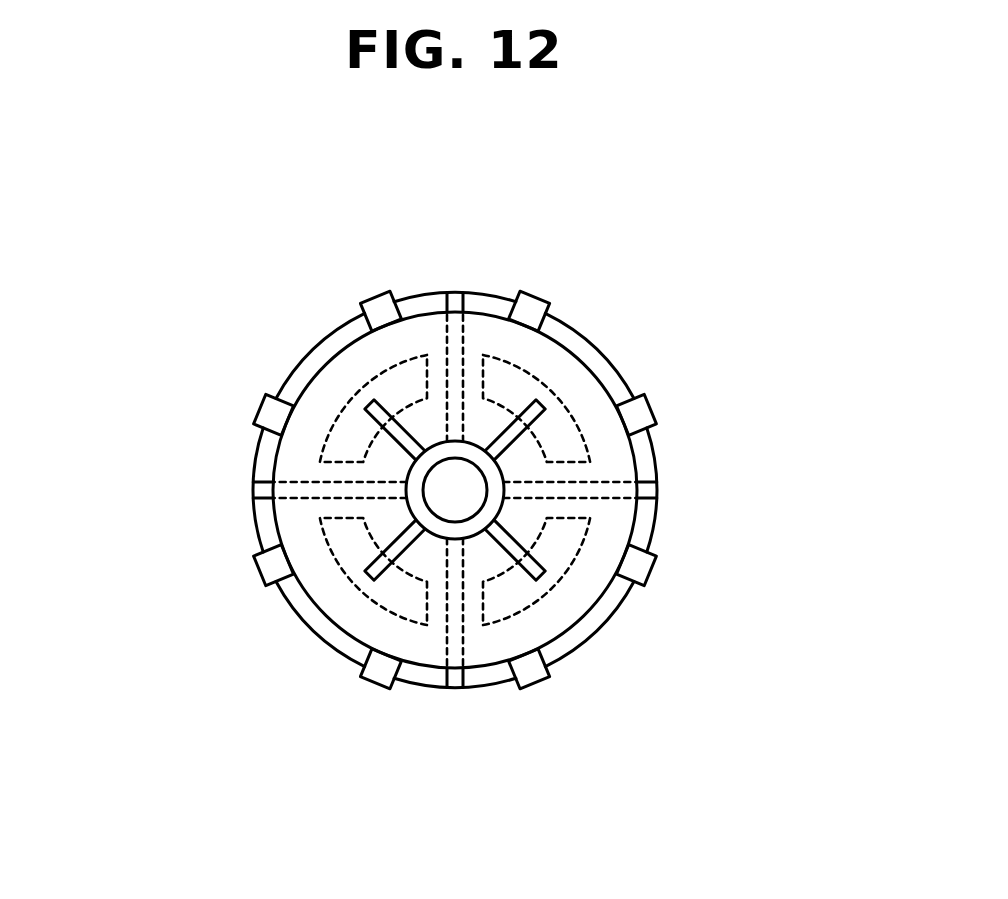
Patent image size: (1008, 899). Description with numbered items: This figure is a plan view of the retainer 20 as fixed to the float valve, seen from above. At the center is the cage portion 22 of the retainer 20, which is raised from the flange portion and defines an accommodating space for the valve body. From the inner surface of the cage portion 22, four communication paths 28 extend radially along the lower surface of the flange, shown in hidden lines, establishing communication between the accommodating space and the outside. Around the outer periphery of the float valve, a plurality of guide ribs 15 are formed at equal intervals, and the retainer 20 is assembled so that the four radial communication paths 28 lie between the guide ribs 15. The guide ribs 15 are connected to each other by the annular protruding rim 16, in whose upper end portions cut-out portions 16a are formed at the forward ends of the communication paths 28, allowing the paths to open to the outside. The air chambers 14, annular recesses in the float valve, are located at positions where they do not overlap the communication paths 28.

The air chamber 14 is at (405, 358).
The guide rib 15 is at (526, 306).
The protruding rim 16 is at (323, 352).
The cut-out portion 16a is at (457, 300).
The retainer 20 is at (573, 387).
The cage portion 22 is at (492, 470).
The communication path 28 is at (464, 340).